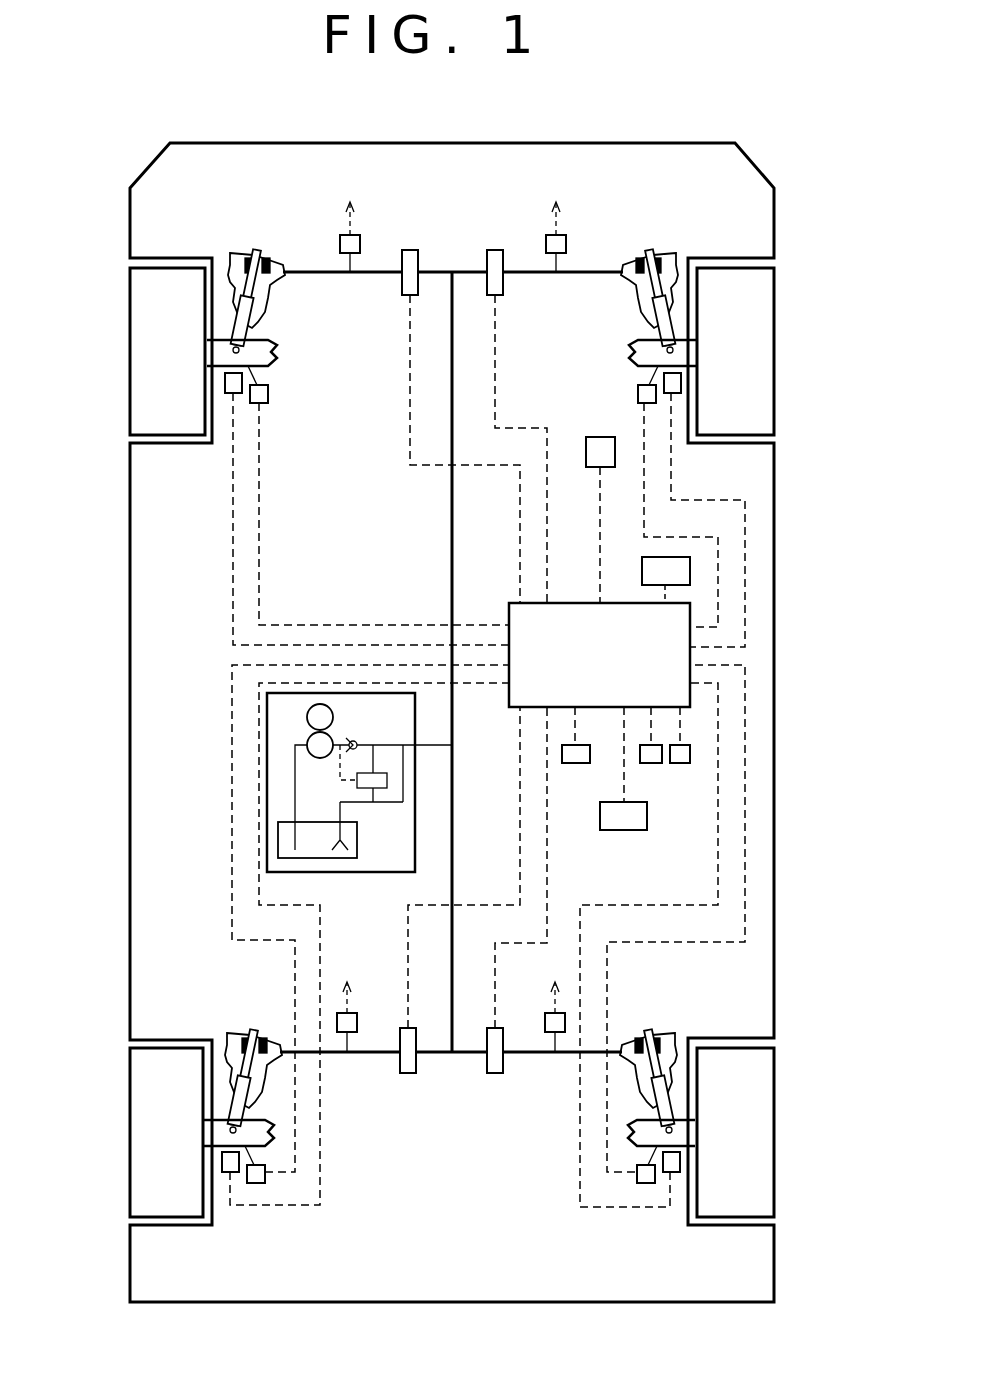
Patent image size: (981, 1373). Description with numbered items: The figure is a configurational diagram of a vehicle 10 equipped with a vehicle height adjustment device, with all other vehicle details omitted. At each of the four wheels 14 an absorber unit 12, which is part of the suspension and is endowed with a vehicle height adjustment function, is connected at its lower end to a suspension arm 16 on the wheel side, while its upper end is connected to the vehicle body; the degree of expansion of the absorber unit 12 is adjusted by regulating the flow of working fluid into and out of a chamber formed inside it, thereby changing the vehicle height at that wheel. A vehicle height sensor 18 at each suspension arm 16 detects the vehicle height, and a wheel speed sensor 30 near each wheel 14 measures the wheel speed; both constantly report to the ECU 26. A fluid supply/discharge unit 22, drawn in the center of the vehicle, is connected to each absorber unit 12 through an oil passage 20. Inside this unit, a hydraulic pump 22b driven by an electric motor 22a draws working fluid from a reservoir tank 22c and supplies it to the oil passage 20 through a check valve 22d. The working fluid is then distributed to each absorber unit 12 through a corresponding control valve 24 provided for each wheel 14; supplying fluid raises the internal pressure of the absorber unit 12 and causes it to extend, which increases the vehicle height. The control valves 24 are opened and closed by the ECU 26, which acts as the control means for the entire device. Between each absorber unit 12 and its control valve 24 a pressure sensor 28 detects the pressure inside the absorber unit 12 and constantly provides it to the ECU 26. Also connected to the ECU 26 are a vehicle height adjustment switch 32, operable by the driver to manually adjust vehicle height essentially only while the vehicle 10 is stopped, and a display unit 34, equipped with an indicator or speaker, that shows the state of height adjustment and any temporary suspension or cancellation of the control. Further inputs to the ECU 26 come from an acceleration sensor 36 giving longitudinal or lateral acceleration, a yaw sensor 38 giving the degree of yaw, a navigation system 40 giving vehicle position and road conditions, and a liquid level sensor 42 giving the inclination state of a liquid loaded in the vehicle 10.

The vehicle 10 is at (734, 128).
The absorber unit 12 is at (248, 246).
The wheel 14 is at (143, 350).
The suspension arm 16 is at (264, 344).
The vehicle height sensor 18 is at (268, 393).
The oil passage 20 is at (378, 275).
The fluid supply/discharge unit 22 is at (338, 806).
The electric motor 22a is at (307, 709).
The hydraulic pump 22b is at (308, 752).
The reservoir tank 22c is at (286, 840).
The check valve 22d is at (360, 742).
The control valve 24 is at (495, 256).
The ECU 26 is at (584, 669).
The pressure sensor 28 is at (340, 243).
The wheel speed sensor 30 is at (225, 383).
The vehicle height adjustment switch 32 is at (591, 470).
The display unit 34 is at (666, 580).
The acceleration sensor 36 is at (677, 765).
The yaw sensor 38 is at (650, 765).
The navigation system 40 is at (620, 824).
The liquid level sensor 42 is at (575, 765).